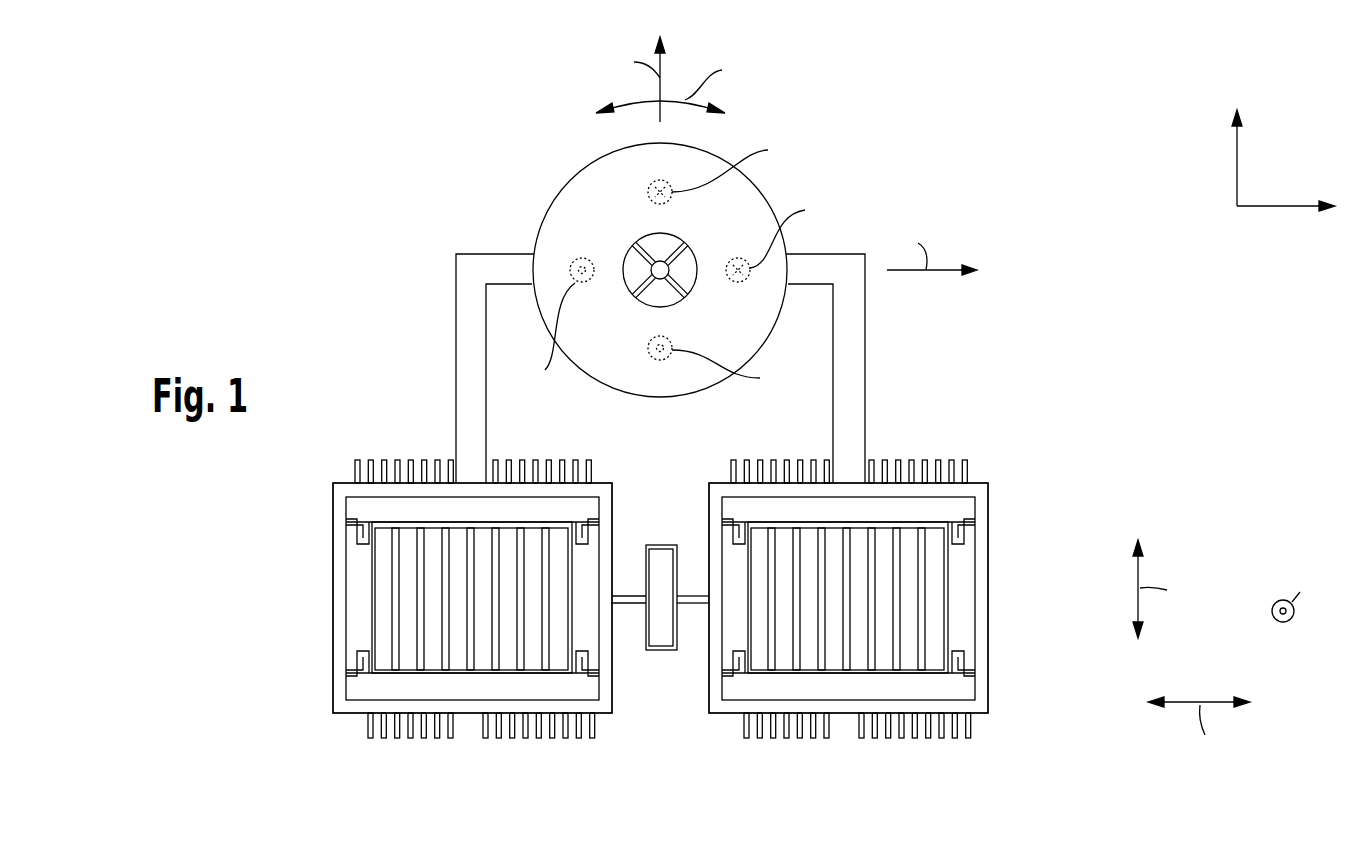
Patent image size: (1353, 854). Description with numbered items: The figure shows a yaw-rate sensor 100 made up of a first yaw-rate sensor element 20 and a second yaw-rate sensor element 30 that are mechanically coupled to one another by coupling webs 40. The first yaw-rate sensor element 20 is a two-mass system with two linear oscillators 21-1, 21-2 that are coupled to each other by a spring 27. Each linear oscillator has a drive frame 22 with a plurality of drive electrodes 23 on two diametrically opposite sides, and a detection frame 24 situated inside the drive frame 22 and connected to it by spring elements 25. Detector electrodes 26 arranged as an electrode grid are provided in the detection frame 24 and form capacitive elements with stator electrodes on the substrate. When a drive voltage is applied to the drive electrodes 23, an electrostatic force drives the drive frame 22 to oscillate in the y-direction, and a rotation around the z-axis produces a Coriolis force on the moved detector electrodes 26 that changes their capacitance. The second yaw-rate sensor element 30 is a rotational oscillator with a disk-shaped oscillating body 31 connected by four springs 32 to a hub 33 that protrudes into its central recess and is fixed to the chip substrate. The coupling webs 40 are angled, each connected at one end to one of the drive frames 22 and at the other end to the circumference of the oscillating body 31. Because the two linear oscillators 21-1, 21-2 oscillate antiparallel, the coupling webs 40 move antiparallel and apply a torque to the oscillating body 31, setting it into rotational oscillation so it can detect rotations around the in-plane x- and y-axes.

The yaw-rate sensor 100 is at (292, 160).
The first yaw-rate sensor element 20 is at (1019, 462).
The first linear oscillator 21-1 is at (463, 742).
The second linear oscillator 21-2 is at (843, 742).
The drive frame 22 is at (350, 712).
The drive electrodes 23 is at (733, 472).
The detection frame 24 is at (372, 578).
The spring elements 25 is at (352, 532).
The detector electrodes 26 is at (420, 620).
The spring 27 is at (660, 650).
The second yaw-rate sensor element 30 is at (1020, 143).
The oscillating body 31 is at (572, 218).
The springs 32 is at (648, 253).
The hub 33 is at (669, 273).
The coupling webs 40 is at (470, 332).